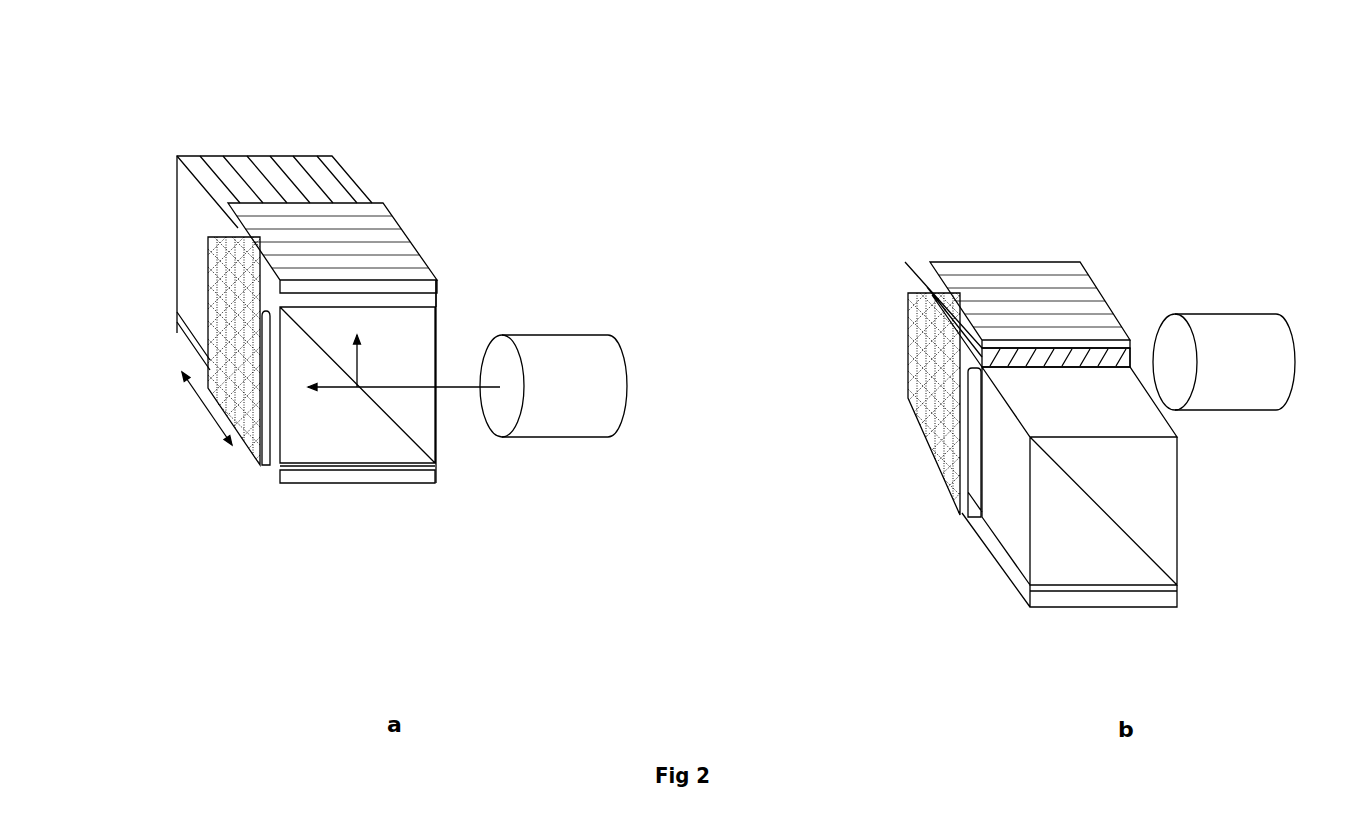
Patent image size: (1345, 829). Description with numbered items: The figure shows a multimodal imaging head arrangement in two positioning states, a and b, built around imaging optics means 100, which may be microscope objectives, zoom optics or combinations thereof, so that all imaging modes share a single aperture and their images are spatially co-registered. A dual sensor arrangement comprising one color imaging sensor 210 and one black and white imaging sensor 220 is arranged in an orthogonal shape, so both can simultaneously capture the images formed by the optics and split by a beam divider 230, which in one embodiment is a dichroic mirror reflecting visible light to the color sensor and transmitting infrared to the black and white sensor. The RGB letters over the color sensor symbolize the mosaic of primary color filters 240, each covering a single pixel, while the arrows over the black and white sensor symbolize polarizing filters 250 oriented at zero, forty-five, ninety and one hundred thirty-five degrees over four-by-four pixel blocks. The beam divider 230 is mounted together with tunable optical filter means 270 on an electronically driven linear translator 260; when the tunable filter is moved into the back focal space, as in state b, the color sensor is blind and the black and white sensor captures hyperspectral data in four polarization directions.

The imaging optics means 100 is at (513, 327).
The color imaging sensor 210 is at (437, 293).
The black and white imaging sensor 220 is at (268, 468).
The beam divider 230 is at (417, 437).
The primary color filters 240 is at (273, 203).
The polarizing filters 250 is at (212, 272).
The electronically driven linear translator 260 is at (328, 473).
The tunable optical filter means 270 is at (285, 165).